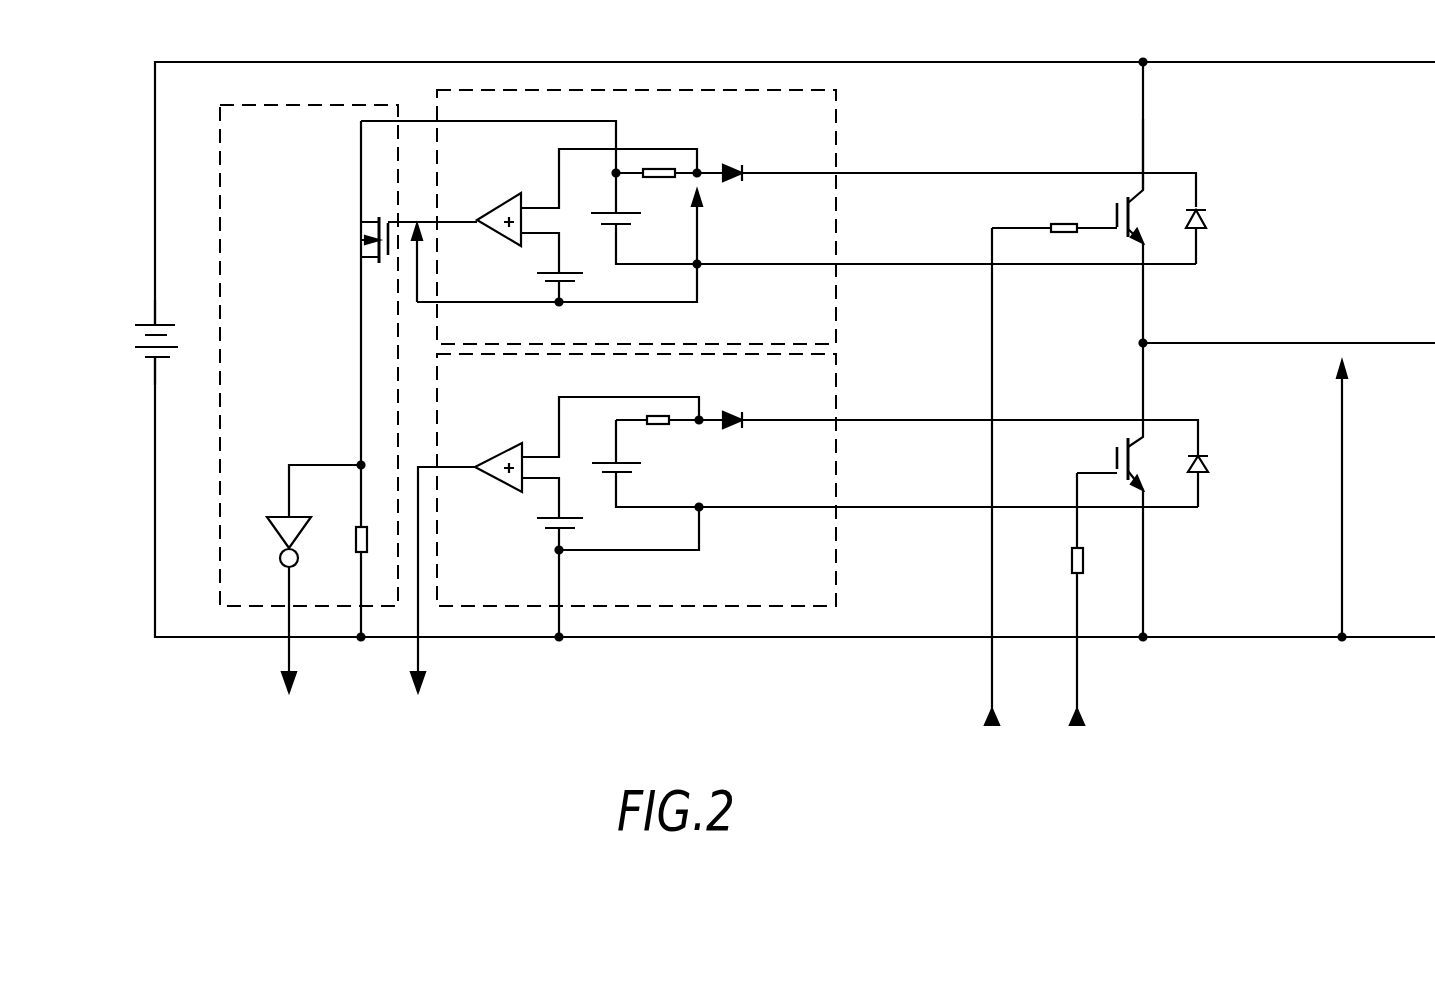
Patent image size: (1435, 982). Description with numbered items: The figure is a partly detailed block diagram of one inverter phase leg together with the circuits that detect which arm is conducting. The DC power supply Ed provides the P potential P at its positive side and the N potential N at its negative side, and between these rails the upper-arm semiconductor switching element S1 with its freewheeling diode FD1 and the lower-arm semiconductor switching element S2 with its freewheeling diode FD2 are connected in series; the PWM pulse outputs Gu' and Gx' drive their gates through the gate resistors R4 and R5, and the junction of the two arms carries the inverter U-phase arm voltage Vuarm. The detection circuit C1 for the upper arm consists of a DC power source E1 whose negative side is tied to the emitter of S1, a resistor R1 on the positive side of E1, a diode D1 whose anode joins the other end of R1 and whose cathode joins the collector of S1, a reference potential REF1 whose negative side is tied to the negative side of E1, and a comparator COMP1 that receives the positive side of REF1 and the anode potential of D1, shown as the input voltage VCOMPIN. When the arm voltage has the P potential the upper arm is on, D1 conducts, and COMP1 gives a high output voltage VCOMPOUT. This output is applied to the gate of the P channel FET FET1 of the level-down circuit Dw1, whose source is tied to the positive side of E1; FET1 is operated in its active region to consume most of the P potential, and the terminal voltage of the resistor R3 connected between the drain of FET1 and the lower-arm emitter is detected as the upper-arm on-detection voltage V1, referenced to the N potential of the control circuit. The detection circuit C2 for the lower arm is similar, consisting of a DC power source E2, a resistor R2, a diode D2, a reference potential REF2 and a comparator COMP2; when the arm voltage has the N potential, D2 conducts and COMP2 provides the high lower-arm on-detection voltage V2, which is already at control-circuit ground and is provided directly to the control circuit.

The DC power supply Ed is at (140, 341).
The P potential P is at (173, 312).
The N potential N is at (175, 375).
The level-down circuit Dw1 is at (309, 355).
The P channel FET FET1 is at (387, 240).
The resistor R3 is at (346, 542).
The upper-arm on-detection voltage V1 is at (314, 597).
The lower-arm on-detection voltage V2 is at (440, 598).
The comparator COMP1 is at (493, 204).
The reference potential REF1 is at (525, 273).
The resistor R1 is at (669, 187).
The DC power source E1 is at (627, 213).
The diode D1 is at (959, 170).
The input voltage to the comparator VCOMPIN is at (759, 214).
The output voltage from the comparator VCOMPOUT is at (483, 280).
The detection circuit C1 is at (636, 217).
The comparator COMP2 is at (488, 451).
The reference potential REF2 is at (524, 525).
The resistor R2 is at (669, 437).
The DC power source E2 is at (630, 460).
The diode D2 is at (960, 418).
The detection circuit C2 is at (636, 480).
The gate resistor R4 is at (1054, 211).
The semiconductor switching element S1 is at (1145, 220).
The freewheeling diode FD1 is at (1220, 237).
The semiconductor switching element S2 is at (1127, 464).
The freewheeling diode FD2 is at (1224, 481).
The gate resistor R5 is at (1094, 558).
The PWM pulse output Gu' is at (992, 498).
The PWM pulse output Gx' is at (1074, 621).
The inverter U-phase arm voltage Vuarm is at (1380, 499).